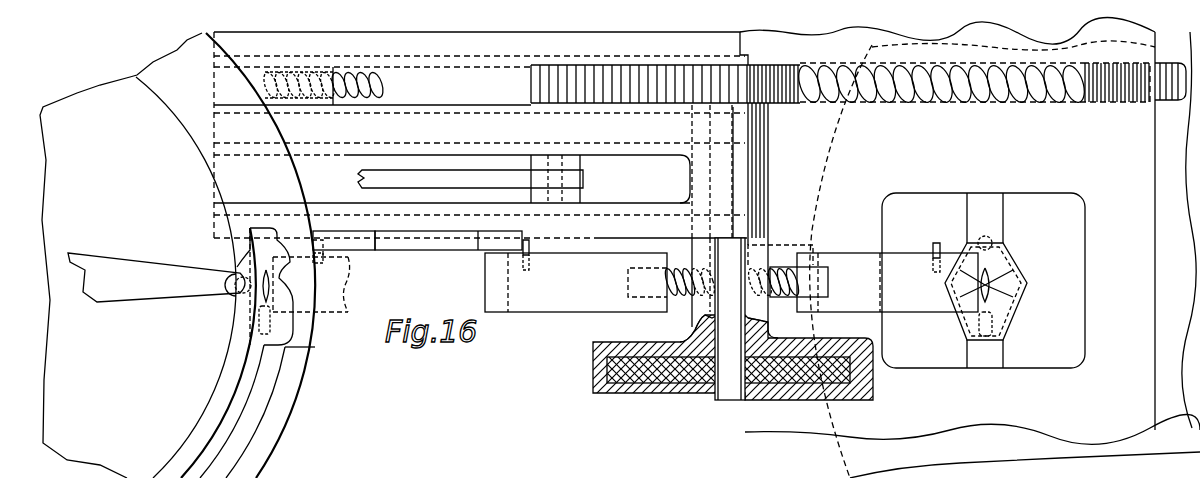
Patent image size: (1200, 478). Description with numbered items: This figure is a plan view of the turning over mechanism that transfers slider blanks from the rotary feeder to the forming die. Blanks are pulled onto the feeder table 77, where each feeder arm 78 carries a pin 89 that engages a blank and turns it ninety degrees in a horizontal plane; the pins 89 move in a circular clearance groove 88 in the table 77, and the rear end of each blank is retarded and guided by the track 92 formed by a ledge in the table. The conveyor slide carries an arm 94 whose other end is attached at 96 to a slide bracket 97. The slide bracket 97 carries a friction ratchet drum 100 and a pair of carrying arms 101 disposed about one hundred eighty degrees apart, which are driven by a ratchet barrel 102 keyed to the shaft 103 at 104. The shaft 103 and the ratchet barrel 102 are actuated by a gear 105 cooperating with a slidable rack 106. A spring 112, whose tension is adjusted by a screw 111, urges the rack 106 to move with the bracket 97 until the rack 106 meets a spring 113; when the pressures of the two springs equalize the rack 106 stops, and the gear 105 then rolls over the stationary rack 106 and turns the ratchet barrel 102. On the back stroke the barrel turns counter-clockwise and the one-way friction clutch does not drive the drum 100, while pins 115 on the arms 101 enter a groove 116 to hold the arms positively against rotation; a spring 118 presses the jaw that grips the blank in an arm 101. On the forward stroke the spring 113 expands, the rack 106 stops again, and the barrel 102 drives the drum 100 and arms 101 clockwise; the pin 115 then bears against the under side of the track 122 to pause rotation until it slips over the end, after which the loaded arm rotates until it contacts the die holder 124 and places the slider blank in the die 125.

The feeder table 77 is at (268, 441).
The feeder arm 78 is at (110, 263).
The circular clearance groove 88 is at (236, 352).
The pin 89 is at (236, 291).
The track 92 is at (237, 403).
The arm 94 is at (355, 183).
The attachment point of arm to slide bracket 96 is at (585, 195).
The slide bracket 97 is at (770, 167).
The friction ratchet drum 100 is at (593, 364).
The carrying arm 101 is at (333, 308).
The ratchet barrel 102 is at (643, 380).
The shaft 103 is at (727, 331).
The key 104 is at (717, 395).
The gear 105 is at (772, 73).
The slidable rack 106 is at (545, 88).
The screw 111 is at (1140, 98).
The spring 112 is at (1002, 98).
The spring 113 is at (384, 86).
The pin 115 is at (533, 249).
The groove 116 is at (450, 251).
The spring 118 is at (677, 267).
The track 122 is at (363, 246).
The die holder 124 is at (809, 426).
The die 125 is at (1068, 300).